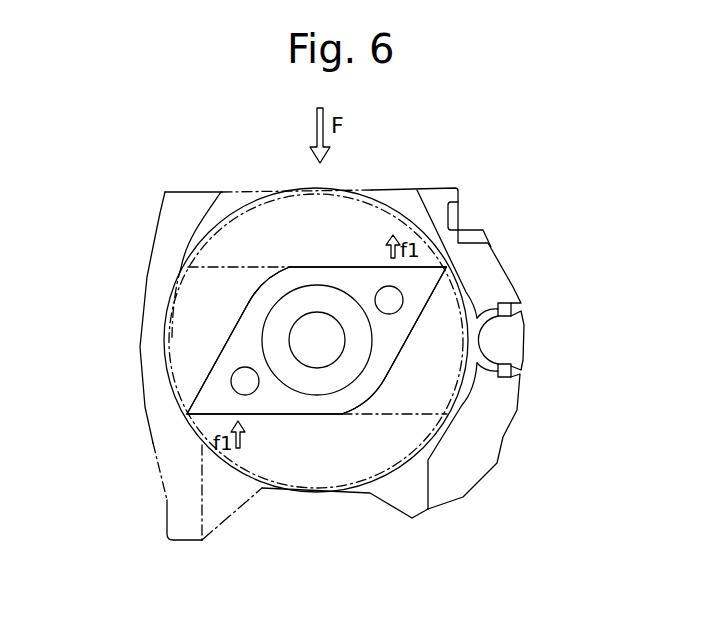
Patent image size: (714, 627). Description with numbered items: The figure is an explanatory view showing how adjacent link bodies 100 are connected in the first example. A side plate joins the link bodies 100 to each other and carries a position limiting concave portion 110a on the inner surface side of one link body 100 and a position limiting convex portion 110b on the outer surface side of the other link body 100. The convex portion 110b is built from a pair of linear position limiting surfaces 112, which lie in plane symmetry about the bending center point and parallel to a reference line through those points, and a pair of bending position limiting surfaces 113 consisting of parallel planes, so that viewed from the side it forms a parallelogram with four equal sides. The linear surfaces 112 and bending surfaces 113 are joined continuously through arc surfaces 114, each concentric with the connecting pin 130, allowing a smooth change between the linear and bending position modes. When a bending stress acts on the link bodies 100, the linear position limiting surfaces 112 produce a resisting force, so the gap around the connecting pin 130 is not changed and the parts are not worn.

The link body 100 is at (306, 330).
The position limiting concave portion 110a is at (230, 197).
The position limiting convex portion 110b is at (403, 197).
The linear position limiting surface 112 is at (336, 266).
The bending position limiting surface 113 is at (244, 315).
The arc surface 114 is at (283, 271).
The connecting pin 130 is at (262, 348).